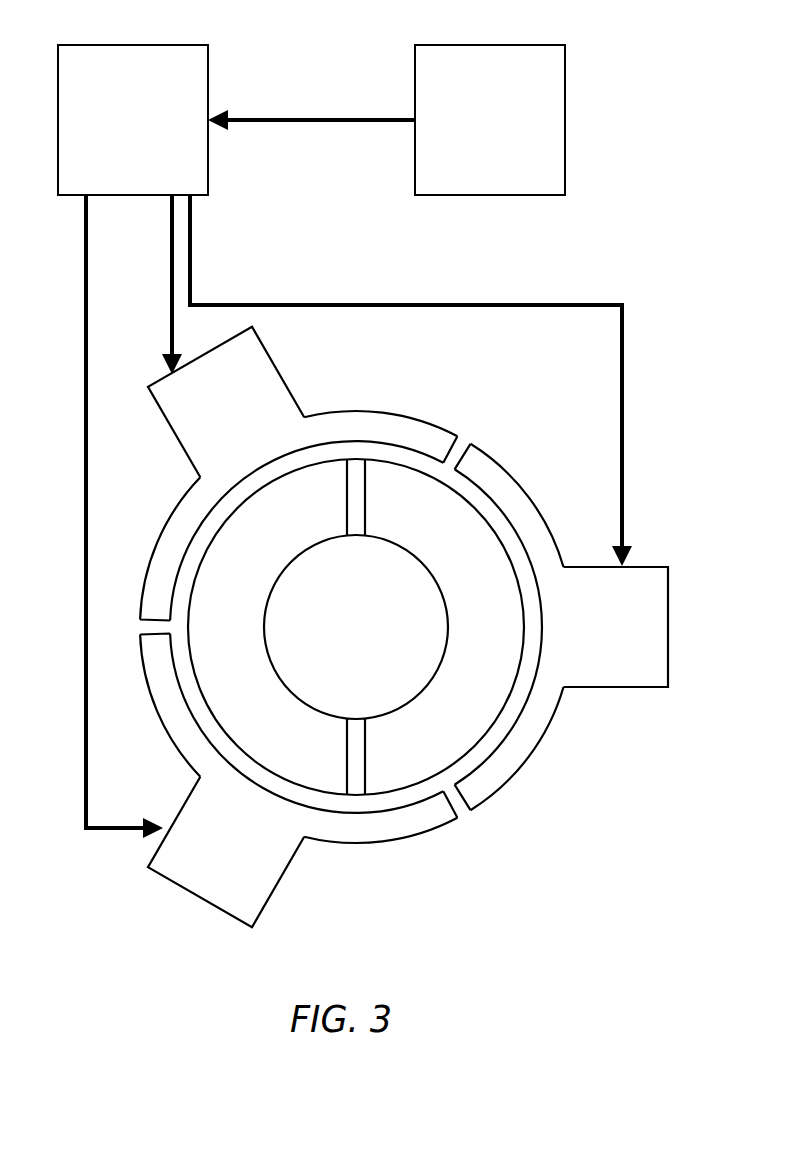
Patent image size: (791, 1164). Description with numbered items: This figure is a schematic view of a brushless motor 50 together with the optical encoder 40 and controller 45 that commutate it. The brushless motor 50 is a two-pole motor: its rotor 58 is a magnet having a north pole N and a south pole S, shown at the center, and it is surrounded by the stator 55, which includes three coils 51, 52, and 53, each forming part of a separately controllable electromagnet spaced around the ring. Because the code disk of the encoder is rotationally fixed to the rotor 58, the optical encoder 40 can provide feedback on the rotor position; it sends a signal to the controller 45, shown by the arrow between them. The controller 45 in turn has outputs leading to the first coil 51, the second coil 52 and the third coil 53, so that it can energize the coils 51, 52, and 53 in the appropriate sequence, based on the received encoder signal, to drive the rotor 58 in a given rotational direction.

The optical encoder 40 is at (490, 120).
The controller 45 is at (133, 120).
The brushless motor 50 is at (404, 639).
The first coil 51 is at (292, 413).
The second coil 52 is at (627, 687).
The third coil 53 is at (205, 903).
The stator 55 is at (385, 823).
The rotor 58 is at (480, 553).